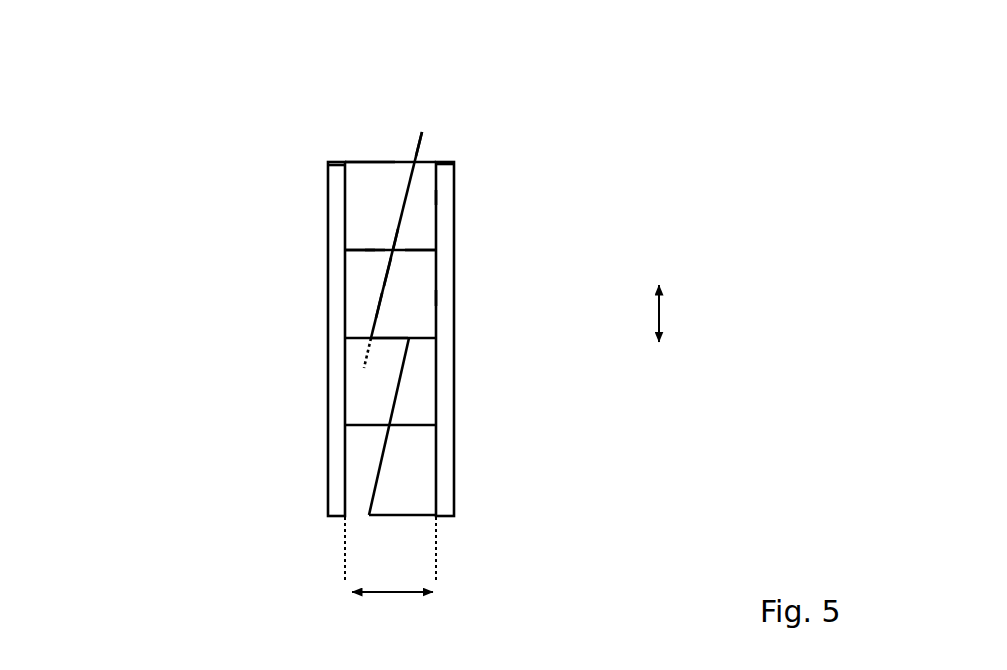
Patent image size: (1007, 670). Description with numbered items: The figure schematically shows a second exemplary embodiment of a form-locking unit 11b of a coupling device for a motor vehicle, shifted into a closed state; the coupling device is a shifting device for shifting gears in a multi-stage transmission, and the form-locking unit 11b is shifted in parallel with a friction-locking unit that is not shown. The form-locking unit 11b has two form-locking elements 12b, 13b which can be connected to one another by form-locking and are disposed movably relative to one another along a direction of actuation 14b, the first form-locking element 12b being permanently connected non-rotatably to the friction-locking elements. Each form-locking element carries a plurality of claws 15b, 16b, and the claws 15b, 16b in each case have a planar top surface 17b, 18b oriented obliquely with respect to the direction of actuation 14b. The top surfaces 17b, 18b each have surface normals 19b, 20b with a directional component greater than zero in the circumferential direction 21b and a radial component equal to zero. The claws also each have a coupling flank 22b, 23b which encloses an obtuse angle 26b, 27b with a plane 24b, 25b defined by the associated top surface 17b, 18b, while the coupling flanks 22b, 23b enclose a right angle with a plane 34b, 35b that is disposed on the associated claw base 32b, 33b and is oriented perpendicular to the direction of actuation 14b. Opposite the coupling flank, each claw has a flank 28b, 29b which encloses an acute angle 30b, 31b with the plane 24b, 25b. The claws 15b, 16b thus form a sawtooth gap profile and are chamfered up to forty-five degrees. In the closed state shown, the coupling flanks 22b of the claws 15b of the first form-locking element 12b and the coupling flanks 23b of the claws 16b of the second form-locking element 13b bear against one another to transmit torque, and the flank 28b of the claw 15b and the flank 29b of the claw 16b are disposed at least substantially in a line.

The form-locking unit 11b is at (197, 182).
The first form-locking element 12b is at (337, 520).
The second form-locking element 13b is at (443, 520).
The direction of actuation 14b is at (388, 593).
The claws 15b is at (360, 197).
The claws 16b is at (428, 328).
The top surface 17b is at (448, 170).
The top surface 18b is at (370, 255).
The surface normal 19b is at (433, 197).
The surface normal 20b is at (358, 300).
The circumferential direction 21b is at (659, 318).
The coupling flank 22b is at (363, 158).
The coupling flank 23b is at (408, 342).
The plane 24b is at (422, 131).
The plane 25b is at (365, 366).
The obtuse angle 26b is at (416, 144).
The obtuse angle 27b is at (392, 343).
The flank 28b is at (357, 255).
The flank 29b is at (418, 247).
The acute angle 30b is at (388, 280).
The acute angle 31b is at (402, 237).
The claw base 32b is at (344, 177).
The claw base 33b is at (442, 298).
The plane 34b is at (345, 578).
The plane 35b is at (437, 558).